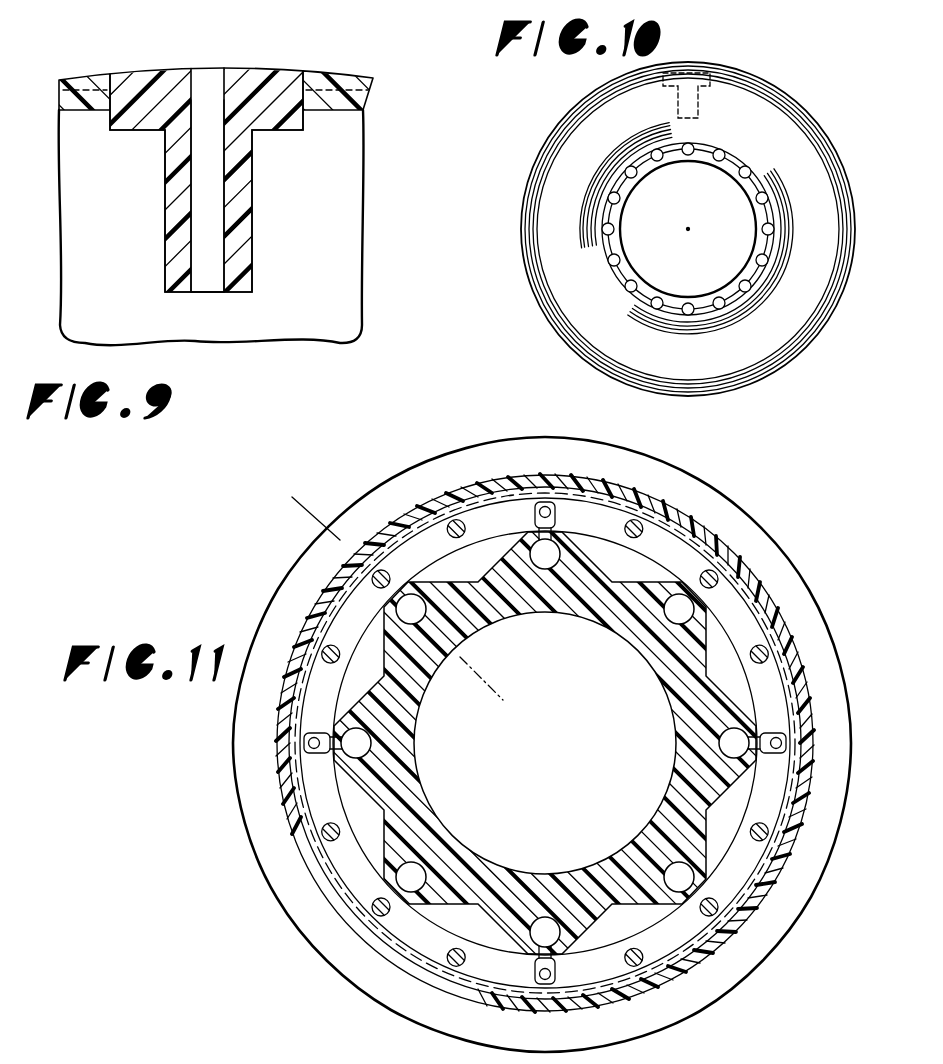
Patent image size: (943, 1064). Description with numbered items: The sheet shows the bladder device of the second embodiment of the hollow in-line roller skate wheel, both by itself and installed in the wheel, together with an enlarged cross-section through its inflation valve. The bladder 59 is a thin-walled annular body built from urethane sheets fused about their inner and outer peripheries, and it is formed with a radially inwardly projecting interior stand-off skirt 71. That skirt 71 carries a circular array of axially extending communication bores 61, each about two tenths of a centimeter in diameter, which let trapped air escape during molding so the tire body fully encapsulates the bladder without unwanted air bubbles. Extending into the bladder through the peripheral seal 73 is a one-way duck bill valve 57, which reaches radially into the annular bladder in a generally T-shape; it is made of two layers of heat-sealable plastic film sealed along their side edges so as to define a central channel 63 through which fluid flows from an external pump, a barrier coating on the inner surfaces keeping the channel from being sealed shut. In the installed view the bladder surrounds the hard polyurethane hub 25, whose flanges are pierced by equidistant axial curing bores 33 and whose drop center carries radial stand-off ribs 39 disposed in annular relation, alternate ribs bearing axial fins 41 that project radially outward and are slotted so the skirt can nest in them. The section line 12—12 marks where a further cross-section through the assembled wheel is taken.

In FIG. 11, the section line 12- 12 is at (295, 503).
In FIG. 11, the hub 25 is at (729, 788).
In FIG. 11, the axial curing bores 33 is at (410, 597).
In FIG. 11, the radial stand-off ribs 39 is at (695, 598).
In FIG. 11, the axial fins 41 is at (787, 744).
In FIG. 9, the duck bill valve 57 is at (163, 72).
In FIG. 10, the duck bill valve 57 is at (691, 80).
In FIG. 10, the bladder 59 is at (831, 133).
In FIG. 10, the communication bores 61 is at (611, 197).
In FIG. 9, the central channel 63 is at (212, 97).
In FIG. 10, the stand off skirt 71 is at (767, 212).
In FIG. 11, the stand off skirt 71 is at (598, 968).
In FIG. 9, the peripheral seal 73 is at (208, 66).